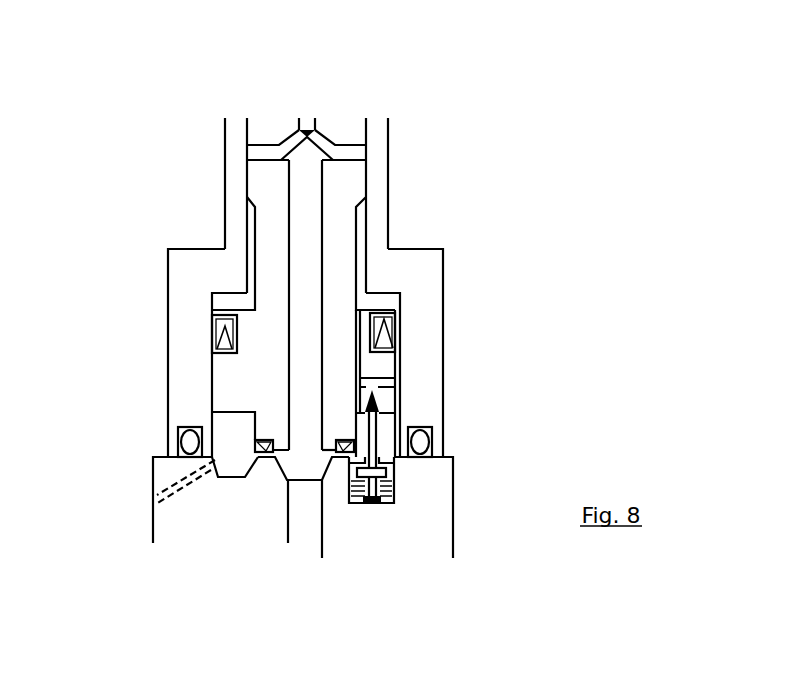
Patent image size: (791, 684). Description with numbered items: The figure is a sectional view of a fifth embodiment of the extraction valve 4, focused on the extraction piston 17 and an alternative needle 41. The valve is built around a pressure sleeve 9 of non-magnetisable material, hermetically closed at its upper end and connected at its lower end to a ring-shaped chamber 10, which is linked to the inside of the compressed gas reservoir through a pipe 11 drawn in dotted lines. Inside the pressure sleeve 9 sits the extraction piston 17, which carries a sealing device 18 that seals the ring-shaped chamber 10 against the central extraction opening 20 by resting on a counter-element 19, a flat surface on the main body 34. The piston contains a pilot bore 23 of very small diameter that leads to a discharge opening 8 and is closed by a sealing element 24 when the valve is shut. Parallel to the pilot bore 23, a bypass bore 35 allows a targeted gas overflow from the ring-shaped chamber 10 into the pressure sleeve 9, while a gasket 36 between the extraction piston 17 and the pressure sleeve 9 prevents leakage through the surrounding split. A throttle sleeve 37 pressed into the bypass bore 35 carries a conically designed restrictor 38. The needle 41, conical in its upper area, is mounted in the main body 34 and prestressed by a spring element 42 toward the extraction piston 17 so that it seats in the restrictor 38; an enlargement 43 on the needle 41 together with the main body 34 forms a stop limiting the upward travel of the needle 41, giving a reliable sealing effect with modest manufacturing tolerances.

The extraction valve 4 is at (163, 197).
The discharge opening 8 is at (298, 205).
The pressure sleeve 9 is at (187, 273).
The ring-shaped chamber 10 is at (232, 440).
The pipe 11 is at (157, 497).
The extraction piston 17 is at (345, 240).
The sealing device 18 is at (352, 440).
The counter-element 19 is at (380, 503).
The central extraction opening 20 is at (310, 525).
The pilot bore 23 is at (313, 135).
The sealing element 24 is at (308, 122).
The main body 34 is at (237, 525).
The bypass bore 35 is at (362, 338).
The gasket 36 is at (222, 327).
The throttle sleeve 37 is at (387, 402).
The restrictor 38 is at (397, 373).
The needle 41 is at (394, 458).
The spring element 42 is at (394, 490).
The enlargement 43 is at (394, 472).